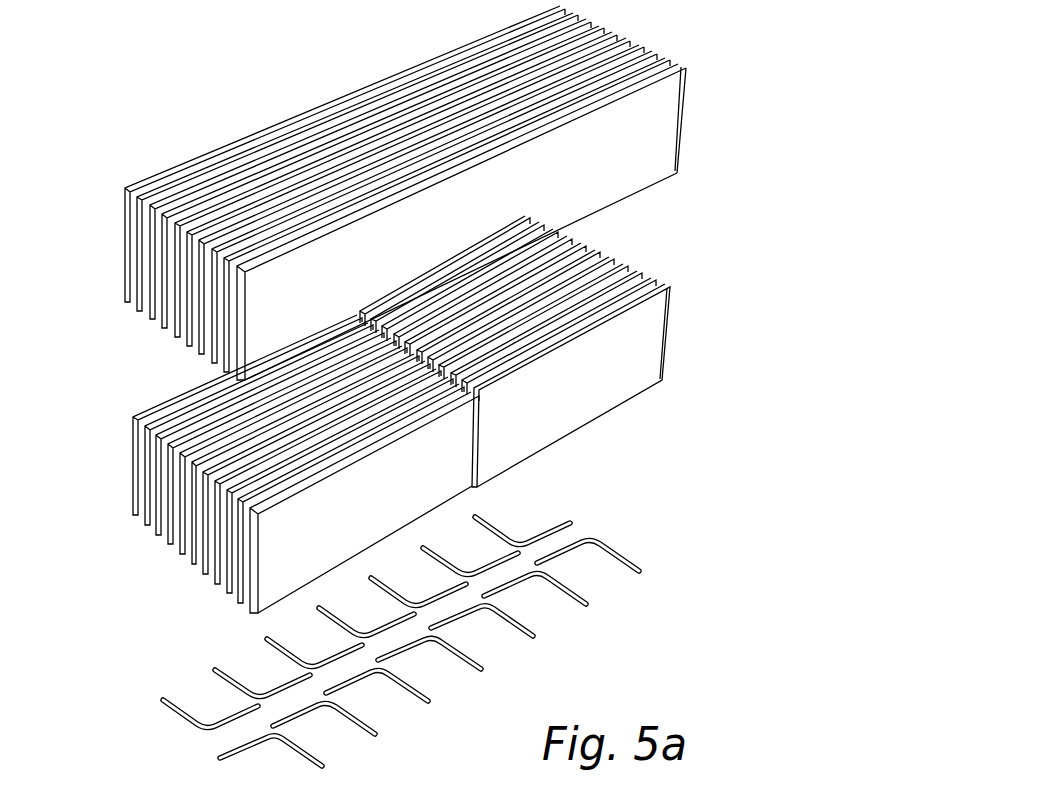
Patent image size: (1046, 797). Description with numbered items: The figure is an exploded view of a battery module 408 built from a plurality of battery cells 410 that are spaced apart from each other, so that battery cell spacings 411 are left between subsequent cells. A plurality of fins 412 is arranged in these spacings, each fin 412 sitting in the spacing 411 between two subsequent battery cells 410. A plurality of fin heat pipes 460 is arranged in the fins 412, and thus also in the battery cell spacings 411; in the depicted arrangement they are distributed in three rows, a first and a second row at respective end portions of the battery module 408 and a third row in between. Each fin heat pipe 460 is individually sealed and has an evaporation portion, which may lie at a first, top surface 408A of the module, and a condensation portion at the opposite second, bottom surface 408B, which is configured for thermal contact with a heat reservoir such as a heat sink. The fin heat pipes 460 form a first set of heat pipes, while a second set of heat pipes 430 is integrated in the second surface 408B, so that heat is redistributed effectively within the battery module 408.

The battery module 408 is at (466, 383).
The first surface 408A is at (473, 191).
The second surface 408B is at (413, 421).
The battery cells 410 is at (652, 42).
The battery cell spacings 411 is at (688, 62).
The fins 412 is at (562, 397).
The second set of heat pipes 430 is at (567, 645).
The fin heat pipes 460 is at (437, 421).